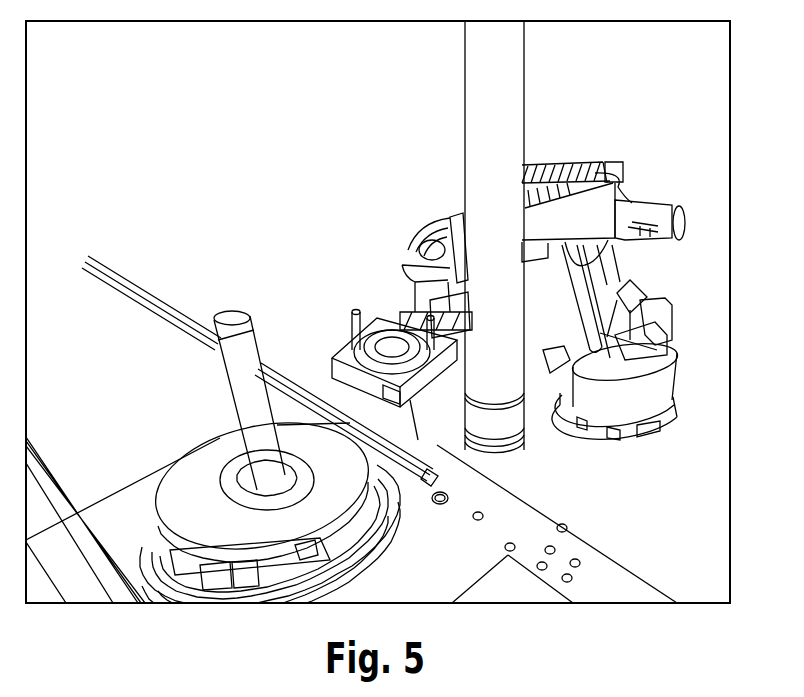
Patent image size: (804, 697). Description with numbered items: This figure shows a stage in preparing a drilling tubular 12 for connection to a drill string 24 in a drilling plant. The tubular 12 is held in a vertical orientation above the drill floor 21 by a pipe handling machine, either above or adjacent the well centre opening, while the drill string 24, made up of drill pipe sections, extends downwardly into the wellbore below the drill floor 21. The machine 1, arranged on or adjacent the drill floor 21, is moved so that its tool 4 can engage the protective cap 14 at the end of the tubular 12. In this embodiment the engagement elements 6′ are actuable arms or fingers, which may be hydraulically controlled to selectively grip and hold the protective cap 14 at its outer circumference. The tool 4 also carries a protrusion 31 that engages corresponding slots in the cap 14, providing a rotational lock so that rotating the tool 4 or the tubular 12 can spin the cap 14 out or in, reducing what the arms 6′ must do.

The machine 1 is at (713, 265).
The tool 4 is at (335, 352).
The engagement elements 6′ is at (398, 313).
The drilling tubular 12 is at (520, 104).
The protective cap 14 is at (522, 448).
The drill floor 21 is at (510, 518).
The drill string 24 is at (233, 410).
The protrusion 31 is at (260, 371).